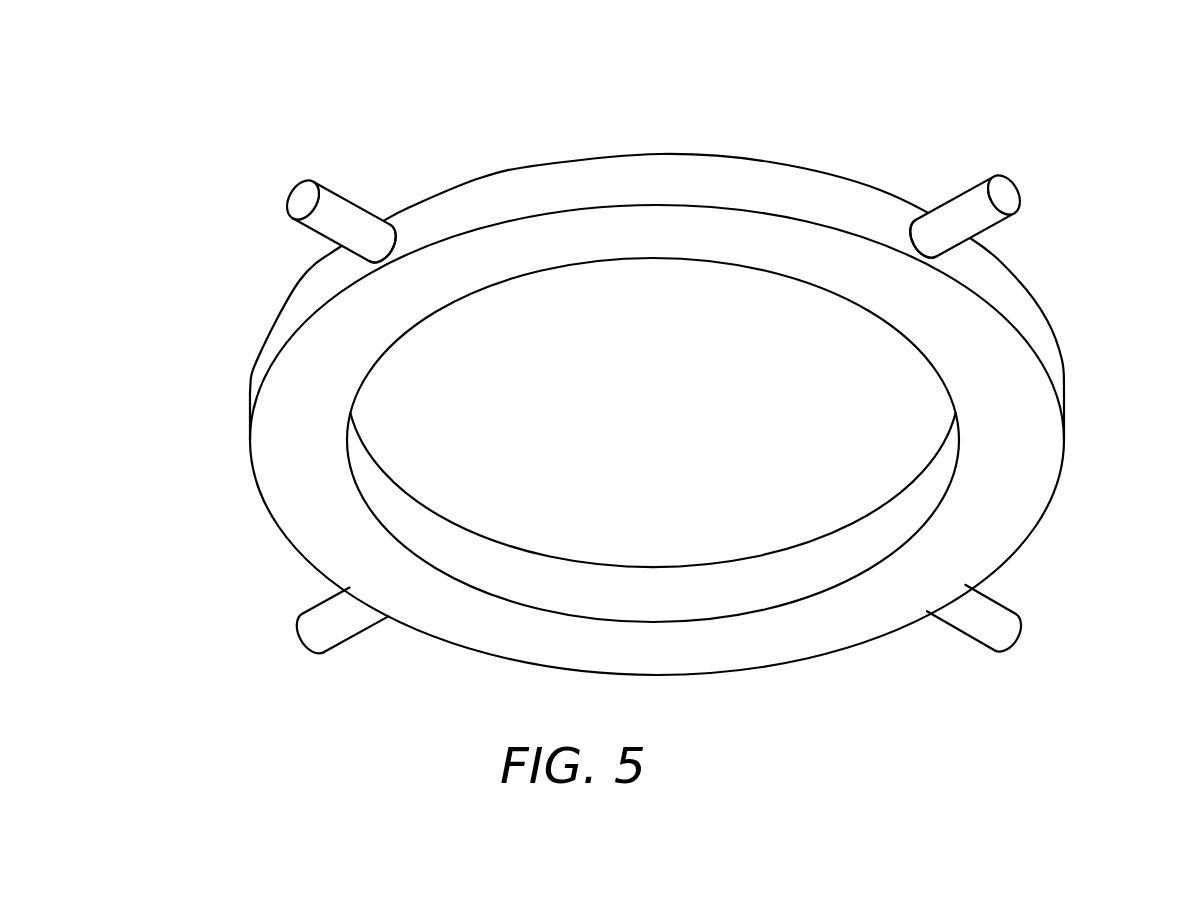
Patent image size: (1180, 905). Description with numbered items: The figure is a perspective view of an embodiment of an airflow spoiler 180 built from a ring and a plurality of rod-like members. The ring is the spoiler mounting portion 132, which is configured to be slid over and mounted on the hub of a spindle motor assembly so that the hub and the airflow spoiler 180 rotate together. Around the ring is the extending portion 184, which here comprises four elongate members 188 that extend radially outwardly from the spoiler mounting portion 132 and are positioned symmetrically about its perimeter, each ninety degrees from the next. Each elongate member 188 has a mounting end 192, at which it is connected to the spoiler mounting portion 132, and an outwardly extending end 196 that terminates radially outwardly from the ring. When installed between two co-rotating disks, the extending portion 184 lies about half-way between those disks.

The airflow spoiler 180 is at (215, 92).
The spoiler mounting portion 132 is at (588, 238).
The extending portion 184 is at (402, 197).
The elongate member 188 is at (666, 416).
The mounting end 192 is at (367, 262).
The outwardly extending end 196 is at (300, 193).